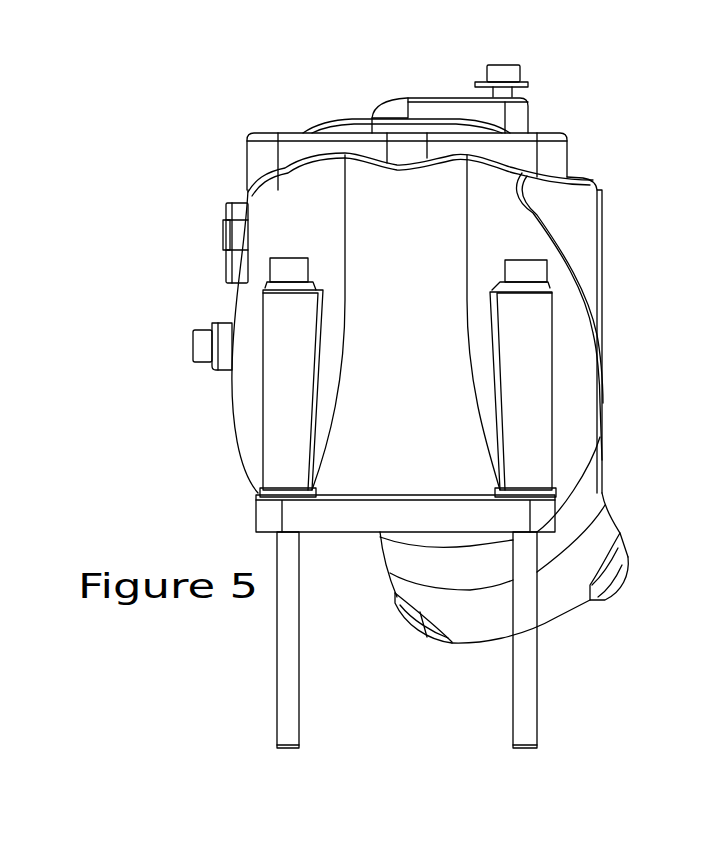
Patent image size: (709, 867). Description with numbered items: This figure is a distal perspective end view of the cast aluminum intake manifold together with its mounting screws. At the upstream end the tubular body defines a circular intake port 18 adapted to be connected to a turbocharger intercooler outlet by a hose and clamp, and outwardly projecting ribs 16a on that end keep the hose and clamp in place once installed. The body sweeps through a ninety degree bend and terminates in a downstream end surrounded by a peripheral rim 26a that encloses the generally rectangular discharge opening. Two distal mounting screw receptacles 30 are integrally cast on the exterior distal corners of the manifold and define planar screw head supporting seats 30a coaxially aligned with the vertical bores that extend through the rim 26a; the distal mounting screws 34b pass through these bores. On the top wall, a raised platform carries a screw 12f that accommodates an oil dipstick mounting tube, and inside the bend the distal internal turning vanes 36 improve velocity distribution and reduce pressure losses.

The screw 12f is at (503, 65).
The distal internal turning vanes 36 is at (242, 203).
The distal mounting screw receptacles 30 is at (415, 374).
The planar screw head supporting seats 30a is at (310, 279).
The peripheral rim 26a is at (325, 518).
The distal mounting screws 34b is at (512, 700).
The outwardly projecting ribs 16a is at (623, 570).
The circular intake port 18 is at (475, 647).